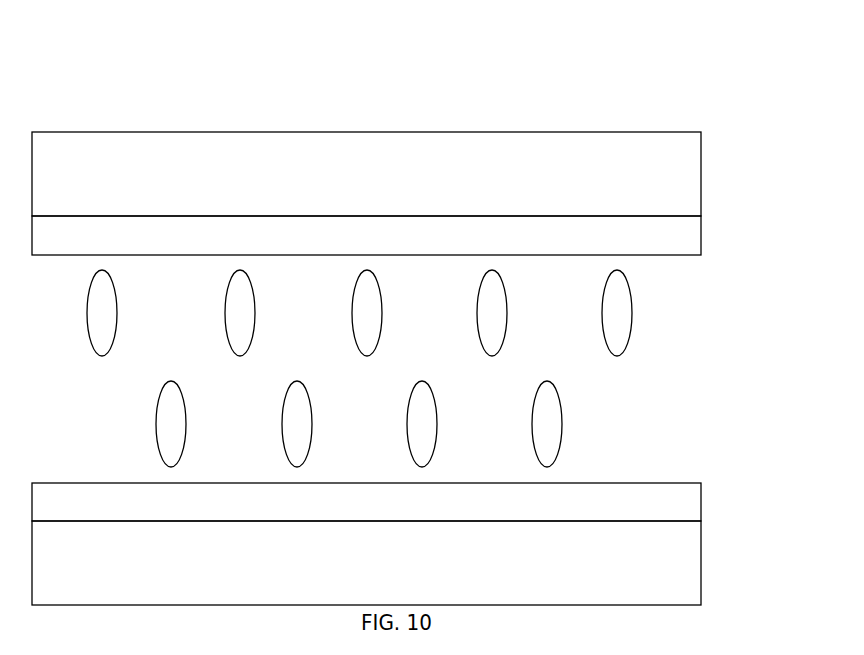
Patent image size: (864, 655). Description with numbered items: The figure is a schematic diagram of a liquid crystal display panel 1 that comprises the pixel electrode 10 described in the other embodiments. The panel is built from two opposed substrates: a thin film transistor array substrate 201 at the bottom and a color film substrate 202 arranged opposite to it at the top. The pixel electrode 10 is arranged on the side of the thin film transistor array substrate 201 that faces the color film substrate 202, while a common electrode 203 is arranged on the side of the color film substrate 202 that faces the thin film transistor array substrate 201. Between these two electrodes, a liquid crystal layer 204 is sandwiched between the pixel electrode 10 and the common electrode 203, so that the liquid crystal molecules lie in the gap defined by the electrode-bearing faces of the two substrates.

The liquid crystal display panel 1 is at (295, 77).
The pixel electrode 10 is at (701, 517).
The thin film transistor array substrate 201 is at (701, 570).
The color film substrate 202 is at (701, 183).
The common electrode 203 is at (701, 238).
The liquid crystal layer 204 is at (631, 328).